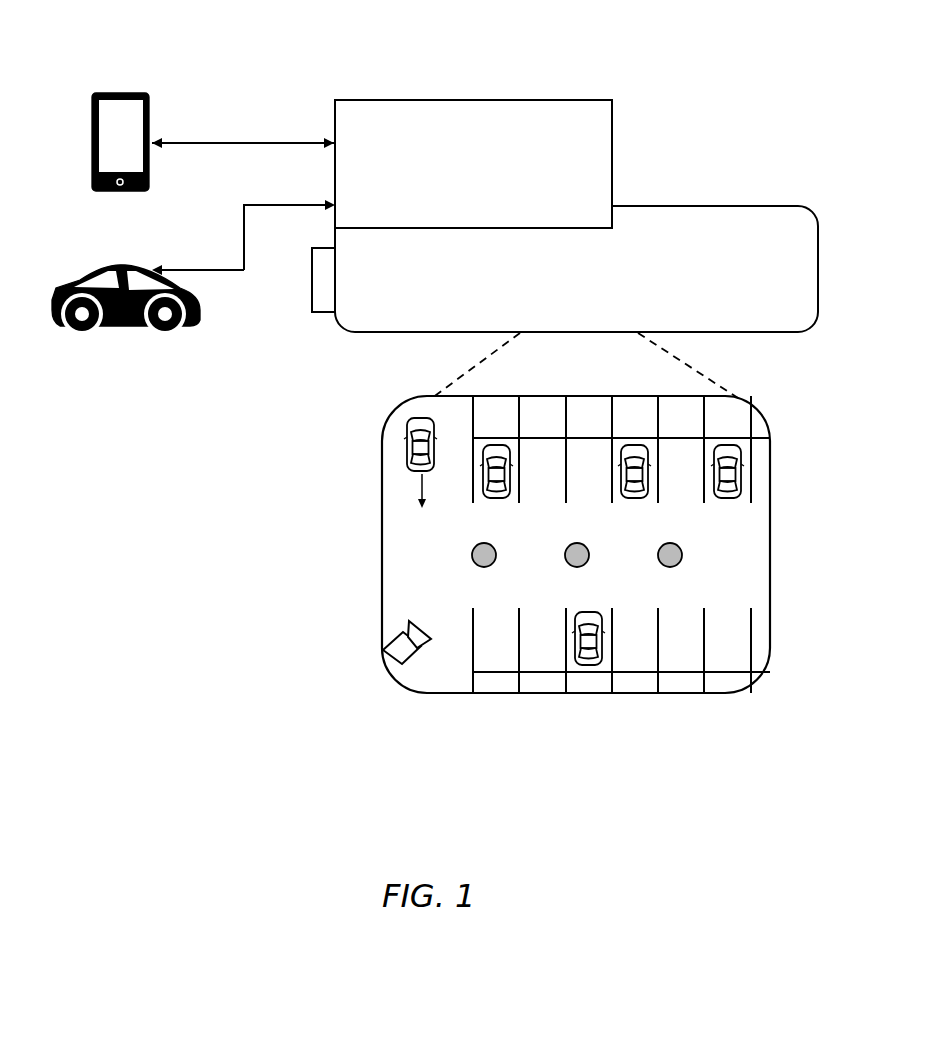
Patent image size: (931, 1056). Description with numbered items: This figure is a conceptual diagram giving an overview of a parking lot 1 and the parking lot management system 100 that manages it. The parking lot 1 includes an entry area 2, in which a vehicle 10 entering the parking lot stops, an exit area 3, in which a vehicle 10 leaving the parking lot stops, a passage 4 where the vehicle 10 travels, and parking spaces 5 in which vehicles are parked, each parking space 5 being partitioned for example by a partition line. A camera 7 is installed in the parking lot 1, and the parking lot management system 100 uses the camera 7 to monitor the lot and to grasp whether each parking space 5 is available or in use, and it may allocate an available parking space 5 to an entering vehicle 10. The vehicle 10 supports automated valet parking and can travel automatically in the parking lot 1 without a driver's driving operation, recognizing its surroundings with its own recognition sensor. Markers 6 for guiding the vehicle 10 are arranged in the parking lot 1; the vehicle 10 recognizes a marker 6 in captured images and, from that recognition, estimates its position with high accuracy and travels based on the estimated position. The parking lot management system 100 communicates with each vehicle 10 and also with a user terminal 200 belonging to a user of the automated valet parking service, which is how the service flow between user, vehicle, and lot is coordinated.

The user terminal 200 is at (116, 90).
The parking lot management system 100 is at (380, 99).
The parking lot 1 is at (706, 205).
The entry area 2 is at (318, 313).
The exit area 3 is at (323, 280).
The passage 4 is at (433, 558).
The parking space 5 is at (496, 622).
The marker 6 is at (490, 545).
The camera 7 is at (398, 636).
The vehicle 10 is at (120, 330).